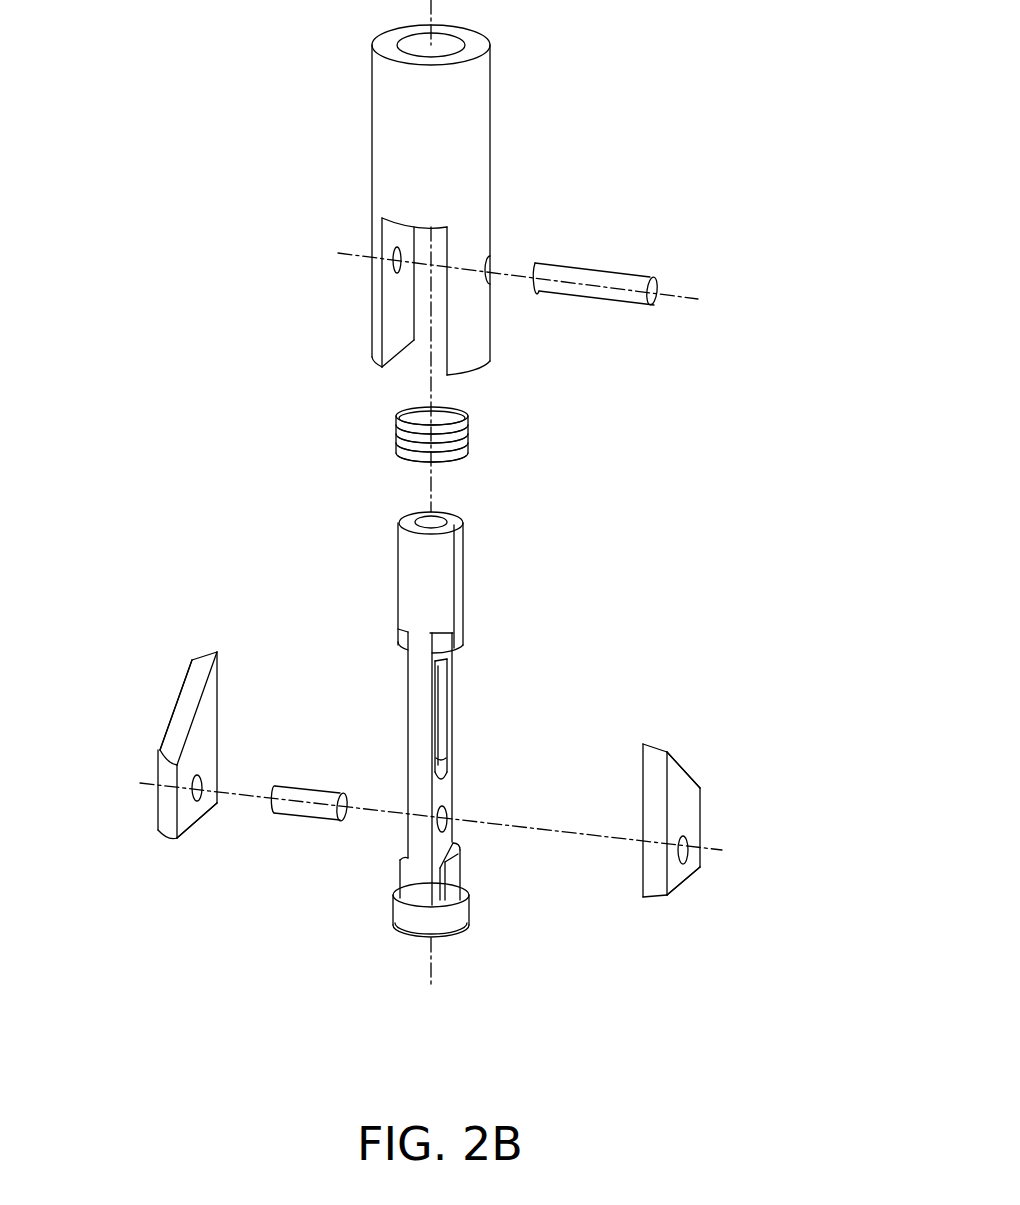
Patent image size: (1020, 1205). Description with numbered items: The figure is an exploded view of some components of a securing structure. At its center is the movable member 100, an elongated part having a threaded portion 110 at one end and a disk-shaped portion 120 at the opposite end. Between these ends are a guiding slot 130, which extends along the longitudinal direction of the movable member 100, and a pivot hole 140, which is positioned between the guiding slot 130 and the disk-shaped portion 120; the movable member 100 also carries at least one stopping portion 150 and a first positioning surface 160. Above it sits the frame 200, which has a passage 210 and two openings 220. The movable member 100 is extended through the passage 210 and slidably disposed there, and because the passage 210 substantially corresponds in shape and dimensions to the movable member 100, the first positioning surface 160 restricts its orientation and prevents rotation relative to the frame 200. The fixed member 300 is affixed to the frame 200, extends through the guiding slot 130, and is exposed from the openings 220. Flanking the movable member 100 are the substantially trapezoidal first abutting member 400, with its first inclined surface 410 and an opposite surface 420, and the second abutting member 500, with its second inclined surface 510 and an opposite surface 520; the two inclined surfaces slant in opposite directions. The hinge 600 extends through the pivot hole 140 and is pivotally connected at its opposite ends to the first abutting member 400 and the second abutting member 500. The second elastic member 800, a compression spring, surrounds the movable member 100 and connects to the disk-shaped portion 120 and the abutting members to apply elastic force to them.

The movable member 100 is at (405, 567).
The threaded portion 110 is at (425, 523).
The disk-shaped portion 120 is at (470, 917).
The guiding slot 130 is at (437, 710).
The pivot hole 140 is at (442, 817).
The stopping portion 150 is at (405, 858).
The first positioning surface 160 is at (458, 555).
The frame 200 is at (480, 114).
The passage 210 is at (440, 45).
The openings 220 is at (392, 300).
The fixed member 300 is at (610, 278).
The first abutting member 400 is at (185, 780).
The first inclined surface 410 is at (183, 705).
The surface 420 is at (198, 822).
The second abutting member 500 is at (685, 800).
The second inclined surface 510 is at (680, 762).
The surface 520 is at (683, 887).
The hinge 600 is at (310, 796).
The second elastic member 800 is at (469, 433).